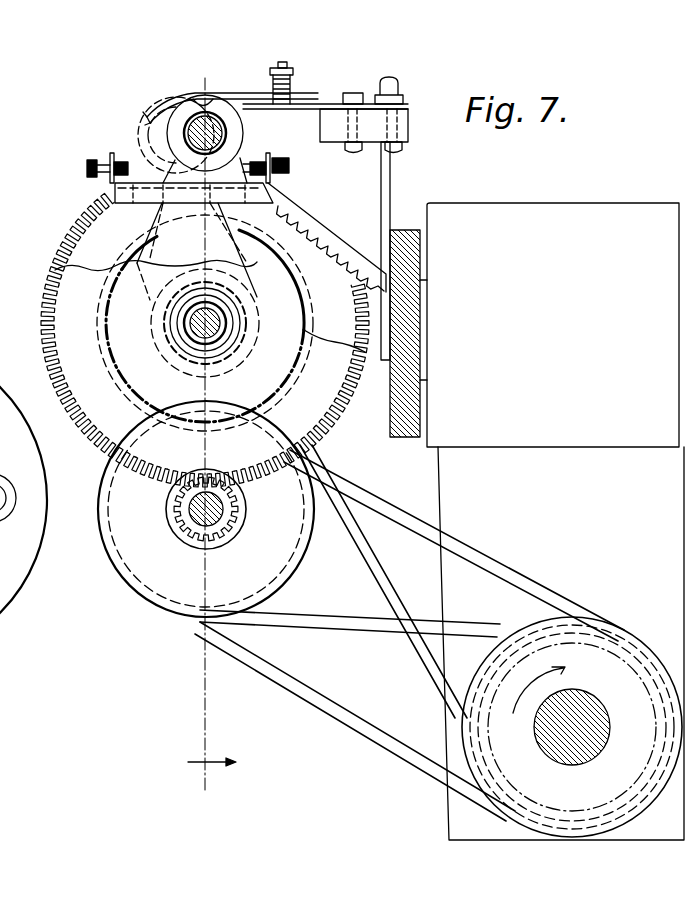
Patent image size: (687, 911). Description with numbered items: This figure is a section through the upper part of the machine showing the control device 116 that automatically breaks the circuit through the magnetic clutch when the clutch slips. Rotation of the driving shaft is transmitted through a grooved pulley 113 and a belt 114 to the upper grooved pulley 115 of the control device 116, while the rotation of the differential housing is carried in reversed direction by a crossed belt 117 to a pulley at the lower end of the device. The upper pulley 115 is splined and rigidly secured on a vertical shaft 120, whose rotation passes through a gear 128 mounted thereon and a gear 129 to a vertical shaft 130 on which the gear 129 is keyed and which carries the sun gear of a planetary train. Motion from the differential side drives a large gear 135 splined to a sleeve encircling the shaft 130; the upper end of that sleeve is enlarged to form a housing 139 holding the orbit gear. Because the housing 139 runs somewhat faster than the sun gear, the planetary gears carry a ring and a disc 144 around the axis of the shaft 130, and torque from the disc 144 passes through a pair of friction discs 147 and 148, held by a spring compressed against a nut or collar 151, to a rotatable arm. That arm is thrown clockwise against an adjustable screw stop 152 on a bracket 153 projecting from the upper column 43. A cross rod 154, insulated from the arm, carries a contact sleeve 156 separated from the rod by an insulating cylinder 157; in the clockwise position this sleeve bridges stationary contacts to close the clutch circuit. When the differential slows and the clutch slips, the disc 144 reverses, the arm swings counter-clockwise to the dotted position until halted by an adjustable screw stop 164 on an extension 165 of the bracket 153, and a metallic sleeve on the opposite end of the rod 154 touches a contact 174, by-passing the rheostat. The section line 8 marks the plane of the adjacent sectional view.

The section line 8- 8 is at (212, 438).
The upper column 43 is at (552, 521).
The grooved pulley 113 is at (572, 727).
The belt 114 is at (518, 573).
The upper grooved pulley 115 is at (297, 570).
The control device 116 is at (149, 616).
The crossed belt 117 is at (405, 632).
The vertical shaft 120 is at (195, 517).
The gear 128 is at (238, 518).
The gear 129 is at (210, 306).
The vertical shaft 130 is at (240, 343).
The large gear 135 is at (72, 233).
The housing 139 is at (312, 300).
The disc 144 is at (283, 281).
The friction disc 147 is at (158, 224).
The friction disc 148 is at (190, 242).
The nut or collar 151 is at (163, 340).
The adjustable screw stop 152 is at (289, 165).
The bracket 153 is at (322, 238).
The cross rod 154 is at (187, 140).
The contact sleeve 156 is at (188, 118).
The cylinder of insulation 157 is at (228, 130).
The adjustable screw stop 164 is at (87, 166).
The extension 165 is at (115, 192).
The contact 174 is at (152, 113).